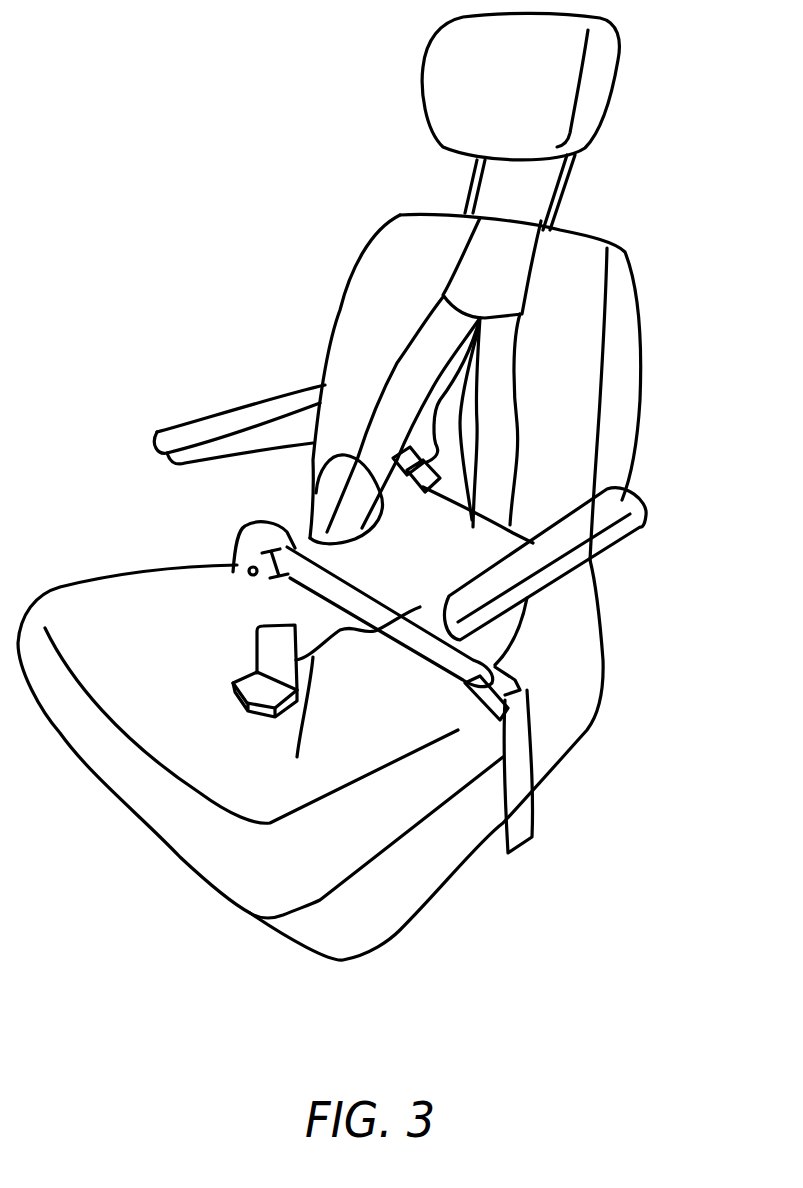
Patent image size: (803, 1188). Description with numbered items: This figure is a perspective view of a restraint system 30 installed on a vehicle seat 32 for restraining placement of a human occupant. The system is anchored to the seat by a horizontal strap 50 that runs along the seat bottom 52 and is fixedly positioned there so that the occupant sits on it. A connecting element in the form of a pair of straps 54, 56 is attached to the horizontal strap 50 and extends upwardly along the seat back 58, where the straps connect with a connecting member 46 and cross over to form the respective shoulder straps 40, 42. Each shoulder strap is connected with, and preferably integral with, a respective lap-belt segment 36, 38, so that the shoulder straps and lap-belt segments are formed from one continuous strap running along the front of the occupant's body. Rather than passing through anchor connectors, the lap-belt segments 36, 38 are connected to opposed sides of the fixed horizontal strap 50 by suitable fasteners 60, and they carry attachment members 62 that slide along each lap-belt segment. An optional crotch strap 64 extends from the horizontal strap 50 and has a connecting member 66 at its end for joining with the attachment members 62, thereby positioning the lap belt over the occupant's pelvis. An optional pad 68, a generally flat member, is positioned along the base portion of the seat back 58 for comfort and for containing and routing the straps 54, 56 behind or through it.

The restraint system 30 is at (538, 392).
The vehicle seat 32 is at (212, 748).
The lap-belt segment 36 is at (513, 695).
The lap-belt segment 38 is at (270, 580).
The shoulder strap 40 is at (610, 490).
The shoulder strap 42 is at (353, 500).
The connecting member 46 is at (513, 292).
The horizontal strap 50 is at (420, 665).
The seat bottom 52 is at (349, 673).
The strap 54 is at (473, 433).
The strap 56 is at (443, 390).
The seat back 58 is at (544, 416).
The fastener 60 is at (278, 580).
The attachment member 62 is at (230, 553).
The crotch strap 64 is at (297, 722).
The connecting member 66 is at (233, 690).
The pad 68 is at (466, 517).